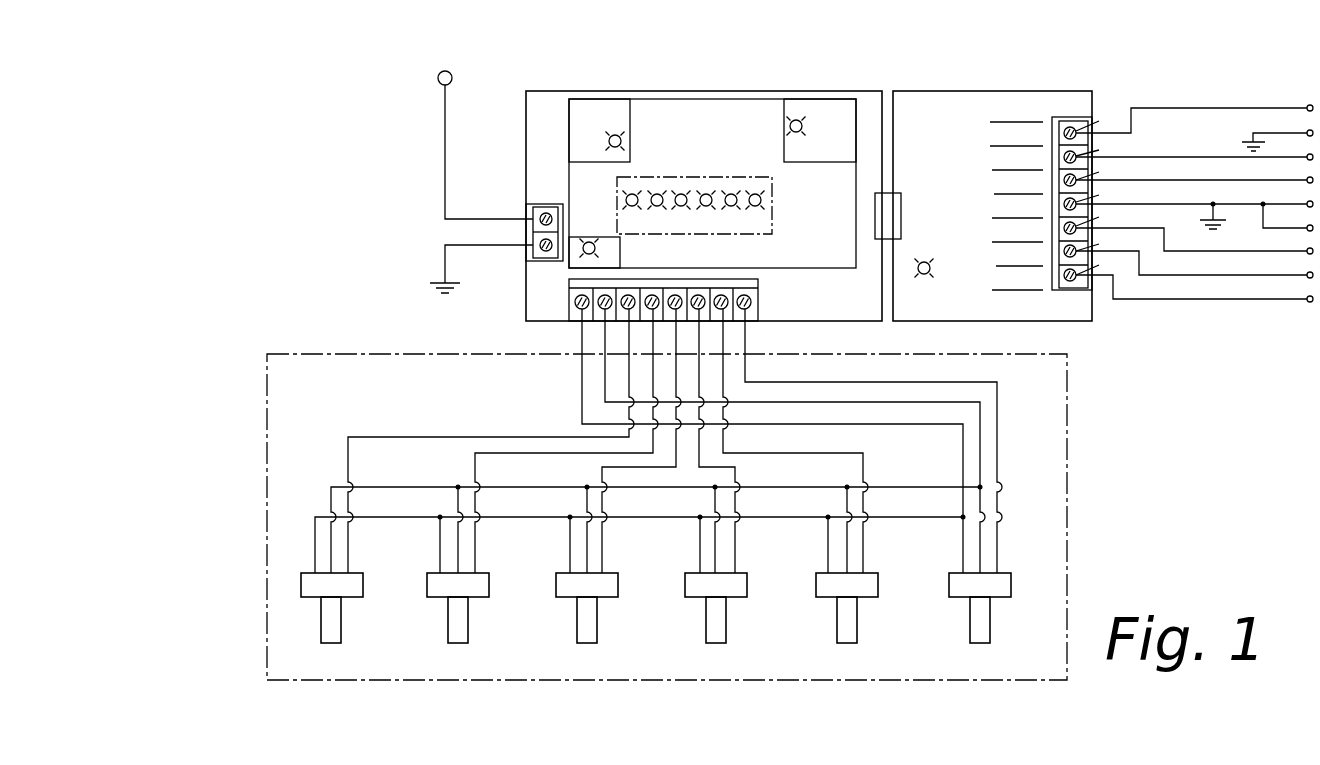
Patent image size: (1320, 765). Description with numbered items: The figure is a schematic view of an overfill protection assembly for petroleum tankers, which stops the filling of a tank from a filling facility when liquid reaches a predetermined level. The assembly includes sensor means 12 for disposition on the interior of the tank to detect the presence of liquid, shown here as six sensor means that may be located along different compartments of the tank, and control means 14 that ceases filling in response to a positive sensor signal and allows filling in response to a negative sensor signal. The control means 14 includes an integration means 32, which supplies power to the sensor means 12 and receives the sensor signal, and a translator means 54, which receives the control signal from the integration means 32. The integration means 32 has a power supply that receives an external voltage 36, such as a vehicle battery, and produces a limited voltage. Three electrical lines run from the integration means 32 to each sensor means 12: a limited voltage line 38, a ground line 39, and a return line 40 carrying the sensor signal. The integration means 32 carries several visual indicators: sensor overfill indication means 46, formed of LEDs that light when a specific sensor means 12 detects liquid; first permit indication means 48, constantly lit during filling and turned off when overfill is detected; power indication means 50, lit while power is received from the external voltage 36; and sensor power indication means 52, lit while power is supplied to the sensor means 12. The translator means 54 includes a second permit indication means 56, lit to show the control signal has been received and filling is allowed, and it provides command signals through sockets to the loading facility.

The sensor means 12 is at (1067, 427).
The control means 14 is at (877, 84).
The integration means 32 is at (692, 90).
The external voltage 36 is at (439, 73).
The limited voltage line 38 is at (332, 512).
The ground line 39 is at (315, 535).
The return line 40 is at (349, 557).
The sensor overfill indication means 46 is at (681, 177).
The first permit indication means 48 is at (798, 119).
The power indication means 50 is at (614, 134).
The sensor power indication means 52 is at (589, 242).
The translator means 54 is at (963, 91).
The second permit indication means 56 is at (927, 261).